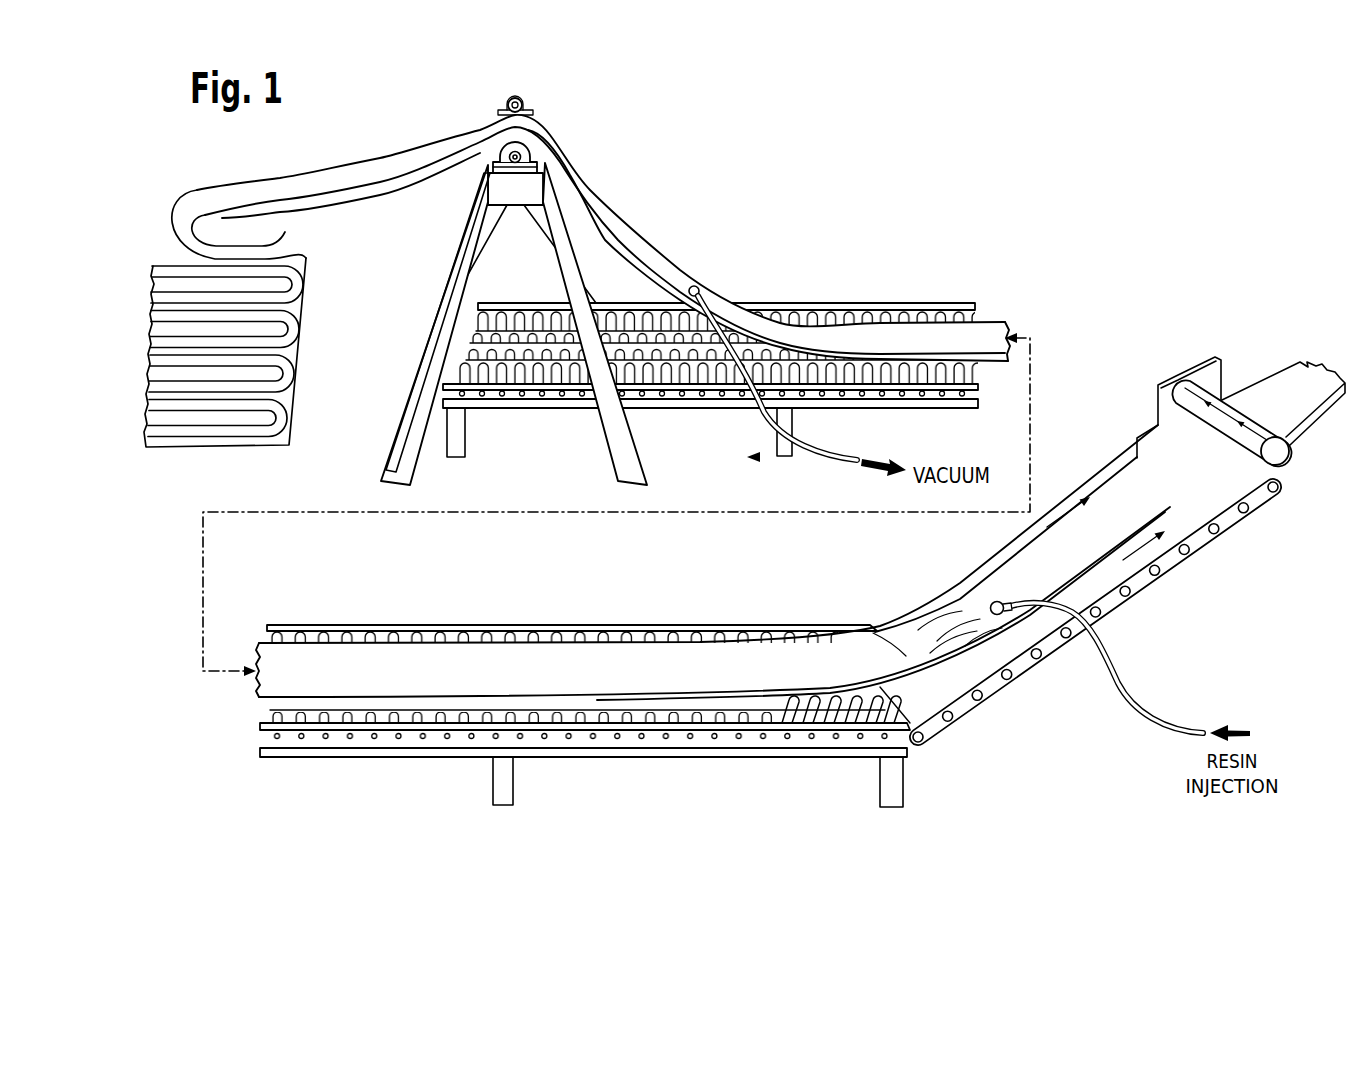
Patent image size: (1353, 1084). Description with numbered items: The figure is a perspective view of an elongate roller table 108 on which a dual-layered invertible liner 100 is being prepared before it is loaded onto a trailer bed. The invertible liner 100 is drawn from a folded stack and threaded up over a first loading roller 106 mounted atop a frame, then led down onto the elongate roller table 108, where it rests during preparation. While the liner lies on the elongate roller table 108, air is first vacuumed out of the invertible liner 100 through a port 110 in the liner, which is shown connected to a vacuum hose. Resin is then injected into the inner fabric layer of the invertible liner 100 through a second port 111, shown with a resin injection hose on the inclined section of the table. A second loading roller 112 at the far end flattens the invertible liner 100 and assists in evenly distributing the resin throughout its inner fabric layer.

The invertible liner 100 is at (797, 323).
The first loading roller 106 is at (528, 104).
The elongate roller table 108 is at (722, 352).
The port 110 is at (699, 287).
The second port 111 is at (992, 603).
The second loading roller 112 is at (1284, 453).